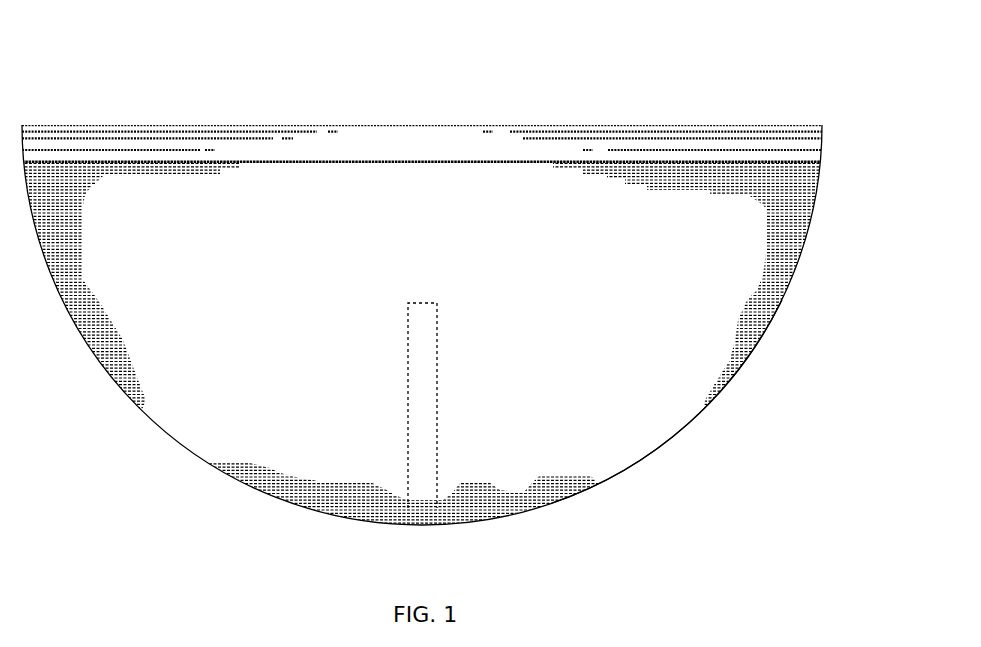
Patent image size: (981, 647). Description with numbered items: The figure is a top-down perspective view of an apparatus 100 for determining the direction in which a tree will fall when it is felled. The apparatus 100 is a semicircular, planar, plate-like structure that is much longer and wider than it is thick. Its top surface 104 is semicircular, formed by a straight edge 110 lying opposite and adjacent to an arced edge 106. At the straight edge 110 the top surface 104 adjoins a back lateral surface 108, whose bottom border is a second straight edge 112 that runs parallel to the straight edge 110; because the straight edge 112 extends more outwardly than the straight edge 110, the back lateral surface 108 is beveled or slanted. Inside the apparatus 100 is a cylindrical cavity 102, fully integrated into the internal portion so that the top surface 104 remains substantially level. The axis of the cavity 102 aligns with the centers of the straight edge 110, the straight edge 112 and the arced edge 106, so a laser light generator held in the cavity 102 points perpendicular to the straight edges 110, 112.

The apparatus 100 is at (622, 98).
The cavity 102 is at (435, 388).
The top surface 104 is at (193, 426).
The arced edge 106 is at (663, 444).
The back lateral surface 108 is at (393, 140).
The straight edge 110 is at (334, 162).
The straight edge 112 is at (273, 124).